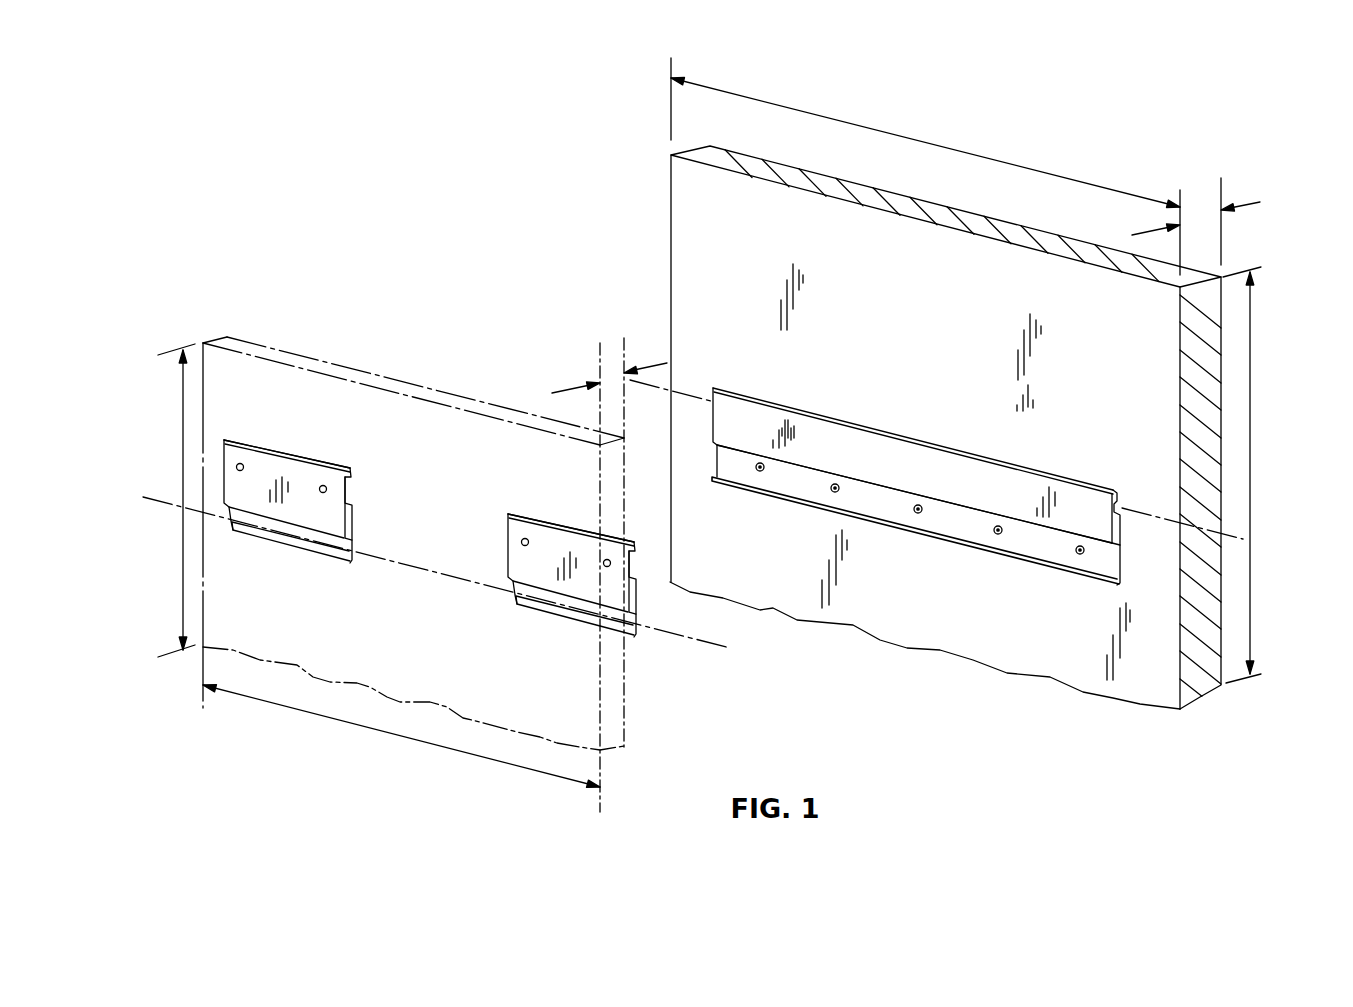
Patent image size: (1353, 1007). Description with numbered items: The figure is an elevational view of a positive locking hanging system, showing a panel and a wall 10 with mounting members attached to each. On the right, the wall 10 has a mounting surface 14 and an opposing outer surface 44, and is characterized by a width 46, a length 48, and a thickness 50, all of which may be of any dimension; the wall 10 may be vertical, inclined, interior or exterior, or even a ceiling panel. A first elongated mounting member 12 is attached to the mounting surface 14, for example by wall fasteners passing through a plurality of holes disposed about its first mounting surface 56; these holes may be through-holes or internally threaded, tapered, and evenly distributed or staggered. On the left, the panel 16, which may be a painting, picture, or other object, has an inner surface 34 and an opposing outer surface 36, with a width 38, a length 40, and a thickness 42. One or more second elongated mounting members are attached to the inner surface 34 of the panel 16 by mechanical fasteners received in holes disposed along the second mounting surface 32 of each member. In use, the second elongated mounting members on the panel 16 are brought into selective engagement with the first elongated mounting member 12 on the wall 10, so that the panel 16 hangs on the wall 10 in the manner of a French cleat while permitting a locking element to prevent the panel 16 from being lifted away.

The wall 10 is at (662, 199).
The first elongated mounting member 12 is at (849, 405).
The mounting surface 14 is at (1069, 379).
The panel 16 is at (325, 343).
The second mounting surface 32 is at (278, 465).
The inner surface 34 is at (443, 426).
The outer surface 36 is at (397, 521).
The width 38 is at (383, 731).
The length 40 is at (180, 542).
The thickness 42 is at (567, 390).
The outer surface 44 is at (958, 290).
The width 46 is at (968, 153).
The length 48 is at (1252, 338).
The thickness 50 is at (1243, 203).
The first mounting surface 56 is at (933, 518).